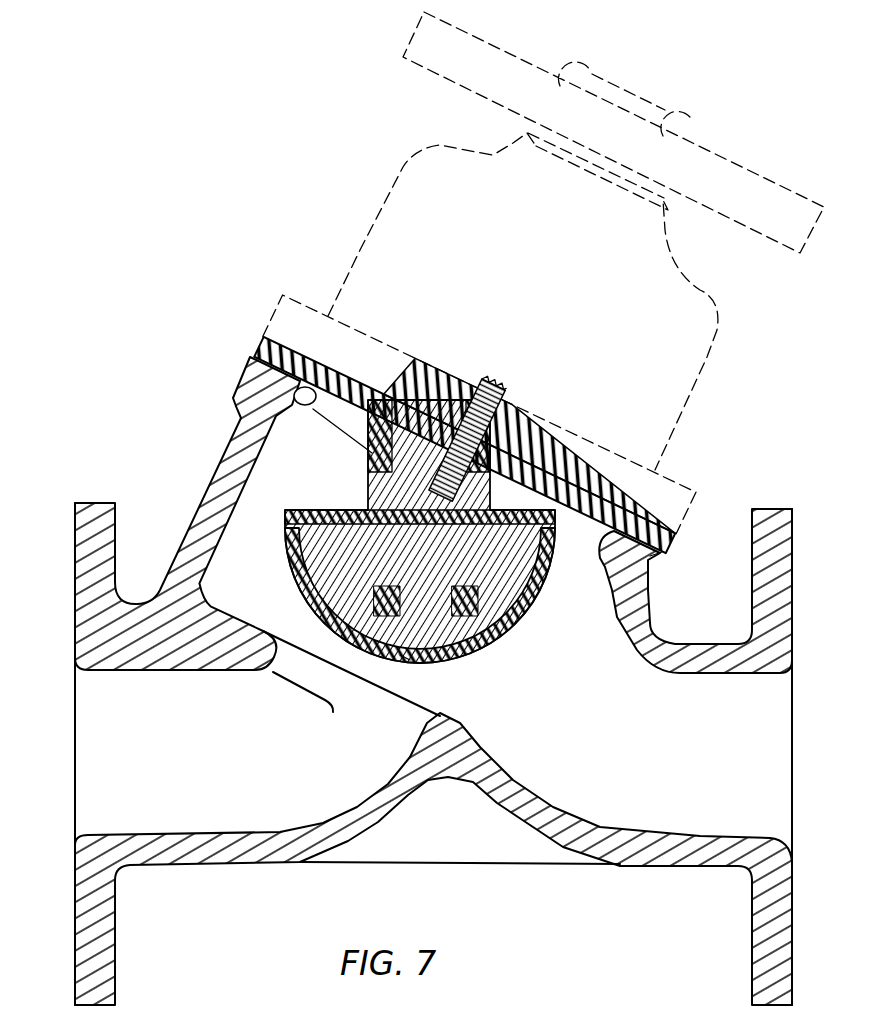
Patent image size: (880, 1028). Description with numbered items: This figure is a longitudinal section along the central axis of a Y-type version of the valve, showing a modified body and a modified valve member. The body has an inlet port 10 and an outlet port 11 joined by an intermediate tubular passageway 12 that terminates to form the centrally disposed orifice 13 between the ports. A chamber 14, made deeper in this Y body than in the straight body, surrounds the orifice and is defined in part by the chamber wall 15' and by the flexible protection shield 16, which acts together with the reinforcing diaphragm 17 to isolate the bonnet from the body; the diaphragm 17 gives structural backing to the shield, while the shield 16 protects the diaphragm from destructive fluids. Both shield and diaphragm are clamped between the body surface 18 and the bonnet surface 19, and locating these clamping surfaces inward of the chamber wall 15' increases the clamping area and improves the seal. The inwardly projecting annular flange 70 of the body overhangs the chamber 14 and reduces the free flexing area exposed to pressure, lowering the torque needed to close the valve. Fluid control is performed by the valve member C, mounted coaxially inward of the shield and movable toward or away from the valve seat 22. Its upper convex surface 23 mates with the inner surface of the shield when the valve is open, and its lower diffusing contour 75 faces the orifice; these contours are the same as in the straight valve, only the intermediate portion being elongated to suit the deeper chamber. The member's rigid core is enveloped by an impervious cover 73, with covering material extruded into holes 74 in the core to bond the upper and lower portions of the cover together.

The inlet port 10 is at (90, 748).
The outlet port 11 is at (778, 752).
The intermediate tubular passageway 12 is at (433, 859).
The central orifice 13 is at (319, 692).
The chamber 14 is at (431, 524).
The chamber wall 15' is at (187, 513).
The flexible protection shield 16 is at (262, 353).
The reinforcing diaphragm 17 is at (270, 340).
The clamping surface of body flange 18 is at (630, 509).
The clamping surface of bonnet flange 19 is at (652, 560).
The valve seat 22 is at (338, 668).
The upper convex surface 23 is at (530, 462).
The inwardly projecting annular flange 70 is at (315, 404).
The cover 73 is at (475, 652).
The holes 74 is at (432, 516).
The lower diffusing contour 75 is at (405, 656).
The valve member C is at (446, 529).